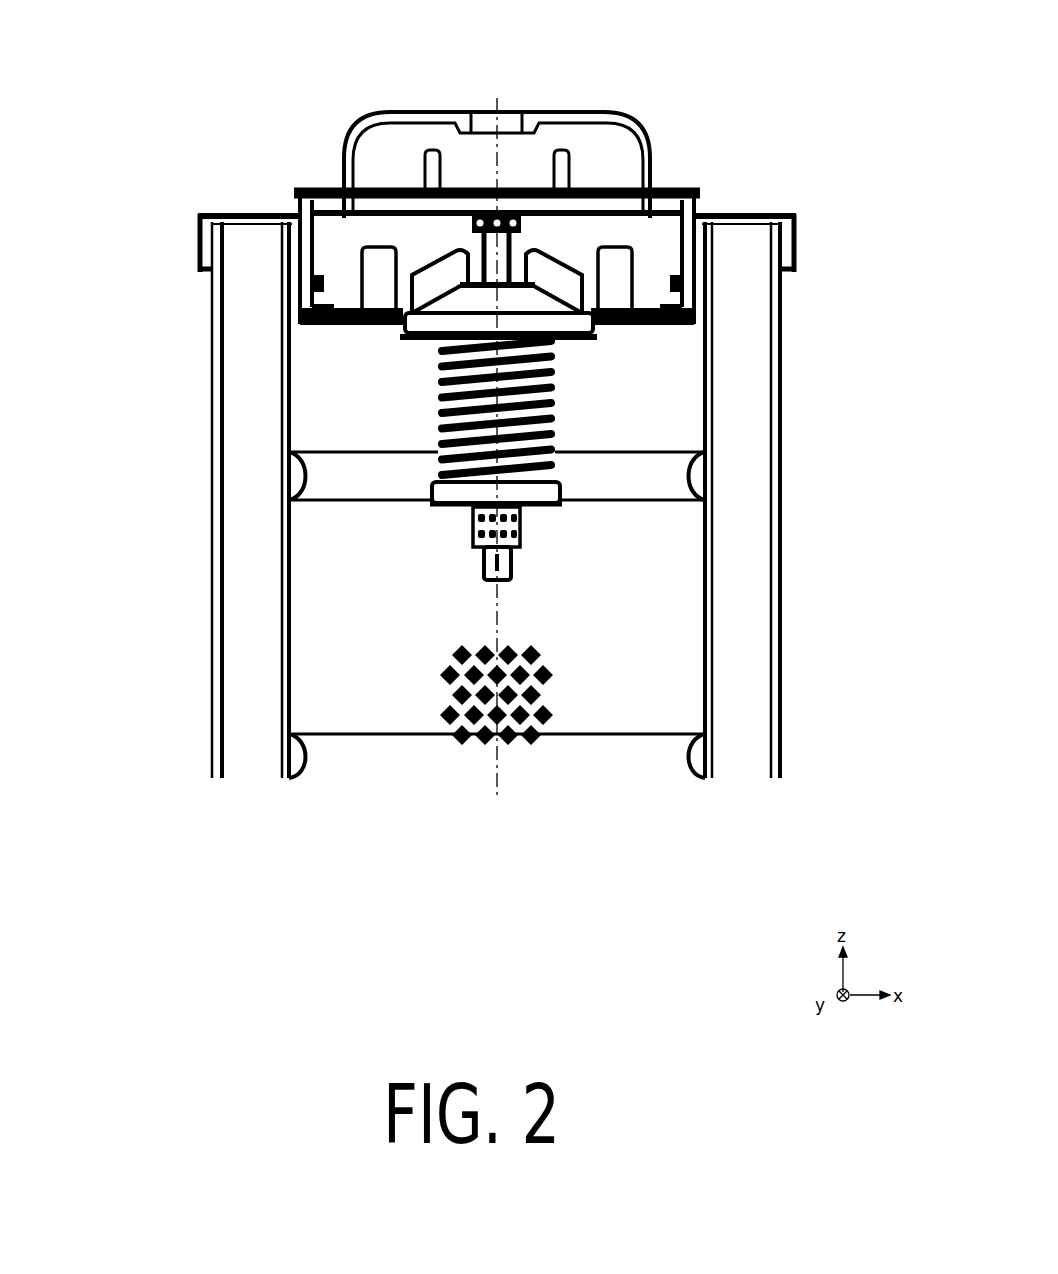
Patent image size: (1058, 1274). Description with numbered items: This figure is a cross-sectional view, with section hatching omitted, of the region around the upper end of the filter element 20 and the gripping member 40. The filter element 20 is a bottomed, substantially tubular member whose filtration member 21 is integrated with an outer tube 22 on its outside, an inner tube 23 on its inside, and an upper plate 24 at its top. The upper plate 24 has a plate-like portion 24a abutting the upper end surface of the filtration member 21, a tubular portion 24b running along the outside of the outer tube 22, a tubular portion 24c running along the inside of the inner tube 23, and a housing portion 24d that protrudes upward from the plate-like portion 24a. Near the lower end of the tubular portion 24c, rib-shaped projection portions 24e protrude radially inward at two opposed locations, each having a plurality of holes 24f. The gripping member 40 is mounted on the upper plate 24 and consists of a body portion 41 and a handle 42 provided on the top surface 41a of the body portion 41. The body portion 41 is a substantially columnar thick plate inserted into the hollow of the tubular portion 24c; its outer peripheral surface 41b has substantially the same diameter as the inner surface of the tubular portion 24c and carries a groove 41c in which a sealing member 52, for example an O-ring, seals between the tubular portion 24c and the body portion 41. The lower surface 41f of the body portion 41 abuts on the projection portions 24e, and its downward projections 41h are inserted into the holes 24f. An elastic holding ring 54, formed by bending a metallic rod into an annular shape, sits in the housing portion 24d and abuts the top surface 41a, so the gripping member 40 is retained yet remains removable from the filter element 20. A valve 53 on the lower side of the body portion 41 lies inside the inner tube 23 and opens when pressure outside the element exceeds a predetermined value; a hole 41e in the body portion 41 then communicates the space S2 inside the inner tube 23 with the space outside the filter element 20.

The filter element 20 is at (145, 451).
The filtration member 21 is at (240, 521).
The outer tube 22 is at (216, 575).
The inner tube 23 is at (307, 637).
The upper plate 24 is at (303, 325).
The plate-like portion 24a is at (254, 222).
The tubular portion 24b is at (198, 250).
The tubular portion 24c is at (303, 278).
The housing portion 24d is at (291, 199).
The projection portion 24e is at (375, 325).
The hole 24f is at (343, 325).
The gripping member 40 is at (630, 111).
The body portion 41 is at (568, 232).
The top surface 41a is at (670, 186).
The outer peripheral surface 41b is at (690, 208).
The groove 41c is at (697, 297).
The hole 41e is at (555, 275).
The lower surface 41f is at (673, 320).
The projection 41h is at (652, 315).
The handle 42 is at (555, 117).
The sealing member 52 is at (310, 297).
The valve 53 is at (563, 488).
The holding ring 54 is at (436, 172).
The space S2 is at (657, 668).